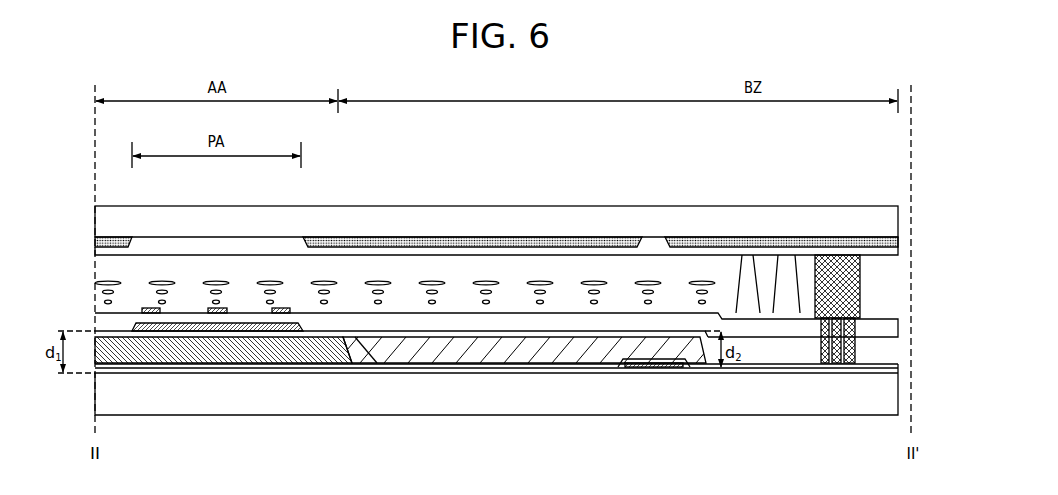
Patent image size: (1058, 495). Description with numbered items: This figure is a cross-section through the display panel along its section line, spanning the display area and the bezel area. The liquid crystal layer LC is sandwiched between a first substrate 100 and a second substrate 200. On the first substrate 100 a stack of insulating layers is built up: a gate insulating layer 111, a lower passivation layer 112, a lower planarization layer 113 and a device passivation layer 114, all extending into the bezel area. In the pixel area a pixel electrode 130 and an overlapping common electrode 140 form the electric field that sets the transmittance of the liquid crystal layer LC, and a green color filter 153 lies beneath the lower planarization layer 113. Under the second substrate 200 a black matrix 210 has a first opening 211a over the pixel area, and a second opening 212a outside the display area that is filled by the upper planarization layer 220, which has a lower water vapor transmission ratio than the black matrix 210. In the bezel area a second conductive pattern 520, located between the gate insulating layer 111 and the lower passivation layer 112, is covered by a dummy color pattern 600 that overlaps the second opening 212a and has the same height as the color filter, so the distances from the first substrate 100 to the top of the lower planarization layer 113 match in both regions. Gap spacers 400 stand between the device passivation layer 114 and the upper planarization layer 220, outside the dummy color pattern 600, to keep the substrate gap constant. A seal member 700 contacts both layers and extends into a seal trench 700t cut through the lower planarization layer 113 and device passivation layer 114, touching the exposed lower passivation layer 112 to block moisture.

The first substrate 100 is at (893, 392).
The gate insulating layer 111 is at (418, 373).
The lower passivation layer 112 is at (242, 368).
The lower planarization layer 113 is at (572, 335).
The device passivation layer 114 is at (892, 330).
The pixel electrode 130 is at (148, 313).
The common electrode 140 is at (280, 328).
The green color filter 153 is at (332, 353).
The second substrate 200 is at (893, 221).
The black matrix 210 is at (95, 245).
The first opening 211a is at (209, 243).
The second opening 212a is at (650, 243).
The upper planarization layer 220 is at (893, 251).
The gap spacer 400 is at (748, 311).
The second conductive pattern 520 is at (650, 369).
The dummy color pattern 600 is at (490, 355).
The seal member 700 is at (852, 283).
The seal trench 700t is at (859, 345).
The liquid crystal layer LC is at (84, 253).